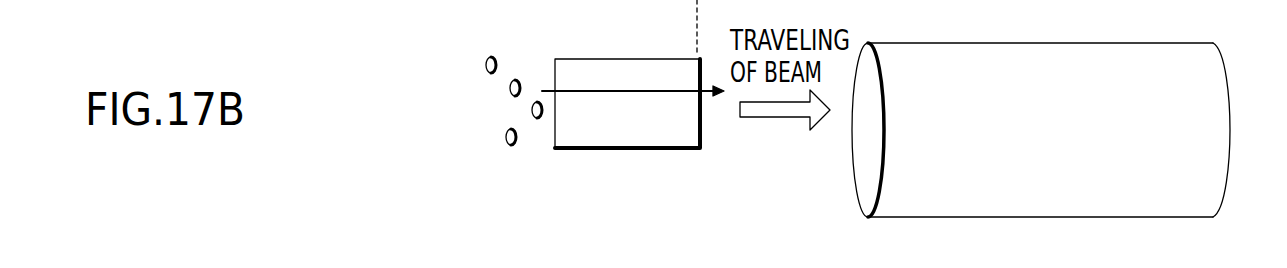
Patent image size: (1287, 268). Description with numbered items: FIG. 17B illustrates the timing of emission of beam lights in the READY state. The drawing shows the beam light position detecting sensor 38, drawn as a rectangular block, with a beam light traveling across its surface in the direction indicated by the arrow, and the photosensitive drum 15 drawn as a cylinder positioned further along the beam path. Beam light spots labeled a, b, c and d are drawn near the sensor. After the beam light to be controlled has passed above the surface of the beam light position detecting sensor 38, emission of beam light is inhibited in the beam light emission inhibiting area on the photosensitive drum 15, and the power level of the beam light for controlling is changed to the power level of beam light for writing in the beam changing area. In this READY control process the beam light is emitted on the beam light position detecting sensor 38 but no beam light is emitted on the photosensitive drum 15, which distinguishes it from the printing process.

The photosensitive drum 15 is at (1195, 47).
The beam light position detecting sensor 38 is at (656, 148).
The light spot a is at (511, 147).
The light spot b is at (536, 120).
The light spot c is at (514, 81).
The light spot d is at (491, 57).